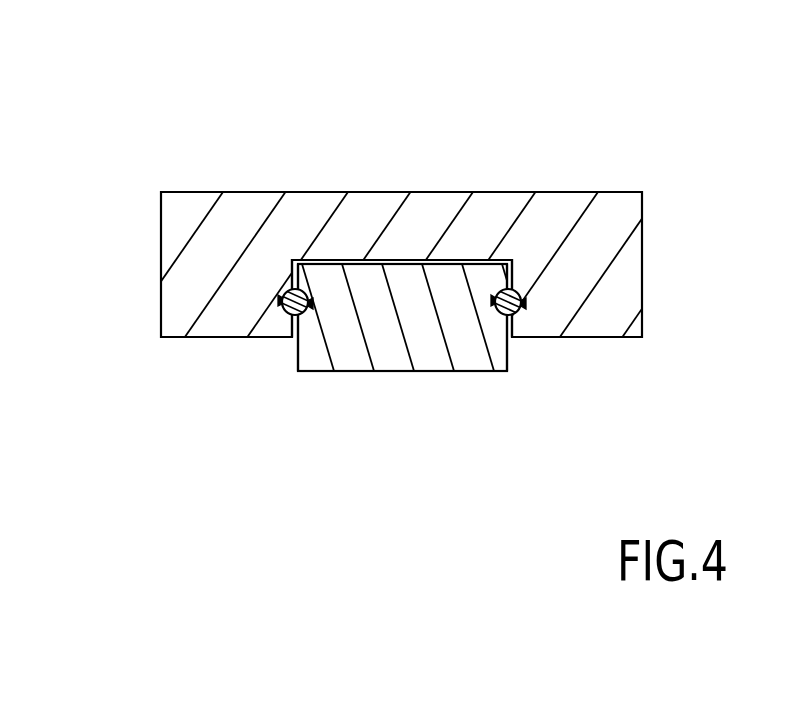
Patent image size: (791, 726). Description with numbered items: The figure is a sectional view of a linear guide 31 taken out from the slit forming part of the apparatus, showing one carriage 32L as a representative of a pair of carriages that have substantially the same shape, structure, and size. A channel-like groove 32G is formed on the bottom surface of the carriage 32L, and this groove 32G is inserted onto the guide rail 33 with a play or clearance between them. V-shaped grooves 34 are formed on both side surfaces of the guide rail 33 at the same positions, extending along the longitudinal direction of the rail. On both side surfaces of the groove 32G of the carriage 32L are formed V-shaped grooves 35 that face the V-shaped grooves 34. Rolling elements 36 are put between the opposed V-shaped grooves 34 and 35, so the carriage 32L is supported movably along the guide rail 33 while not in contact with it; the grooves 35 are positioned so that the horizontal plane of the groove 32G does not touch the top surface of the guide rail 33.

The ball bearing guide assembly 31 is at (409, 158).
The carriage 32L is at (612, 192).
The channel-like groove 32G is at (389, 262).
The guide rail 33 is at (405, 371).
The V-shaped grooves 34 is at (287, 296).
The V-shaped grooves 35 is at (299, 316).
The rolling elements 36 is at (283, 297).